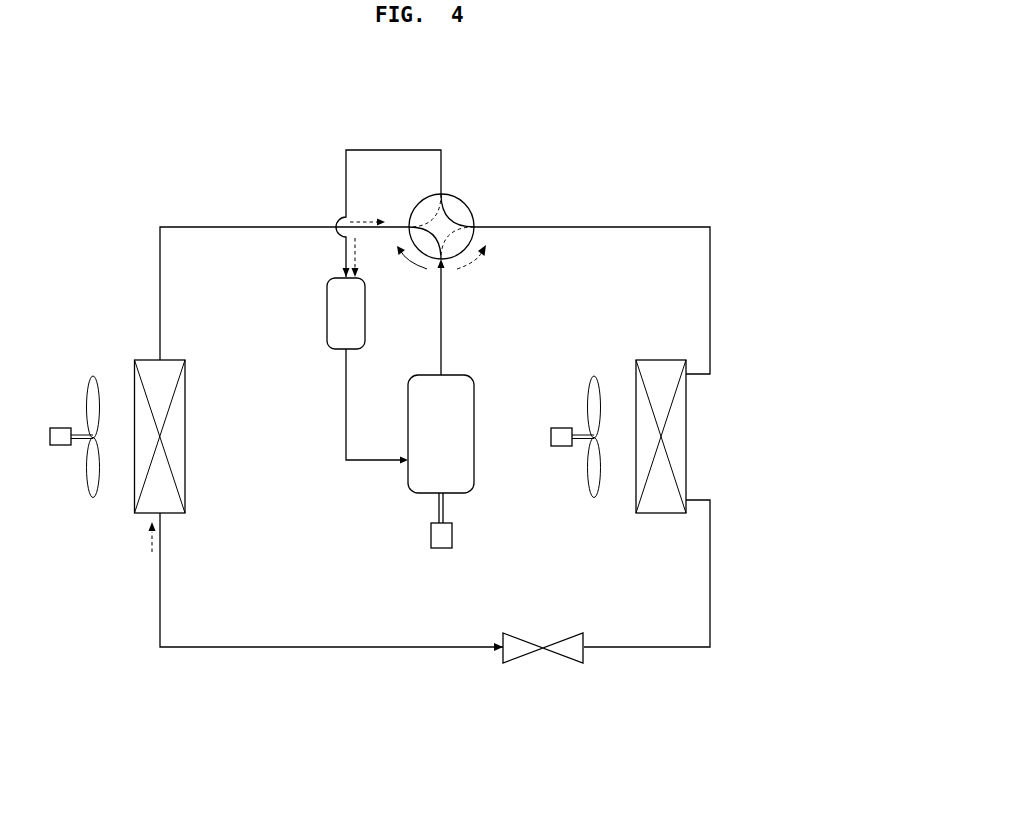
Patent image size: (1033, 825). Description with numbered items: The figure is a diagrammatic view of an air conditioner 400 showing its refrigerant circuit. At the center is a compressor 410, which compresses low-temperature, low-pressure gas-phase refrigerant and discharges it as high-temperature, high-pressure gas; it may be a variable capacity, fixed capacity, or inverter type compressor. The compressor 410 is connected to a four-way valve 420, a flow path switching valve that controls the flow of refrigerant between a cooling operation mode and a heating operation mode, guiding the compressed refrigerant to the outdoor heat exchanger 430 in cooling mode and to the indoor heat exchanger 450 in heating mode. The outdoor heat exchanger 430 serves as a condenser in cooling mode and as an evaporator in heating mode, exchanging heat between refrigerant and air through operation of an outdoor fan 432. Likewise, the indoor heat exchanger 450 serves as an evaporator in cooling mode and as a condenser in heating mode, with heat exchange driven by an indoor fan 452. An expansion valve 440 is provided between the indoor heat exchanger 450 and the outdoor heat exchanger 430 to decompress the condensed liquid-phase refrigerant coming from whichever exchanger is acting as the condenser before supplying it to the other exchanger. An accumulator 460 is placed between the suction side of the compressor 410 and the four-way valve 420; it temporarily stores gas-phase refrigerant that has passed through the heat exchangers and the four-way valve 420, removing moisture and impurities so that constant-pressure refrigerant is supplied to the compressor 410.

The air conditioner 400 is at (665, 161).
The compressor 410 is at (453, 473).
The 4-way valve 420 is at (462, 203).
The outdoor heat exchanger 430 is at (677, 425).
The outdoor fan 432 is at (588, 390).
The expansion valve 440 is at (527, 655).
The indoor heat exchanger 450 is at (170, 505).
The indoor fan 452 is at (97, 497).
The accumulator 460 is at (336, 309).